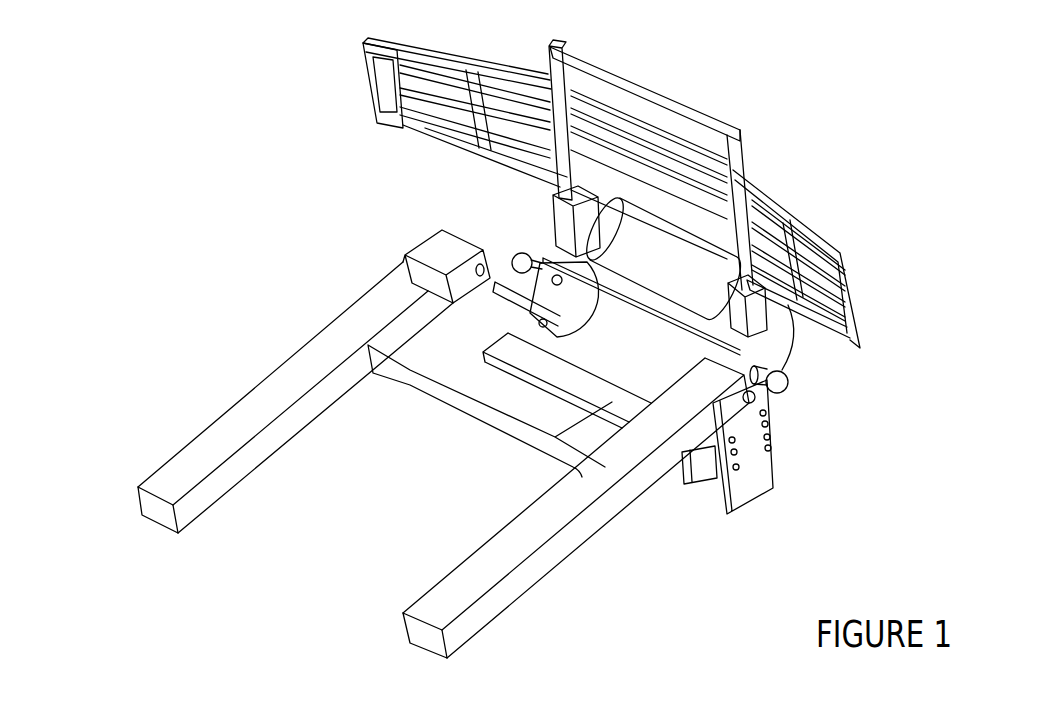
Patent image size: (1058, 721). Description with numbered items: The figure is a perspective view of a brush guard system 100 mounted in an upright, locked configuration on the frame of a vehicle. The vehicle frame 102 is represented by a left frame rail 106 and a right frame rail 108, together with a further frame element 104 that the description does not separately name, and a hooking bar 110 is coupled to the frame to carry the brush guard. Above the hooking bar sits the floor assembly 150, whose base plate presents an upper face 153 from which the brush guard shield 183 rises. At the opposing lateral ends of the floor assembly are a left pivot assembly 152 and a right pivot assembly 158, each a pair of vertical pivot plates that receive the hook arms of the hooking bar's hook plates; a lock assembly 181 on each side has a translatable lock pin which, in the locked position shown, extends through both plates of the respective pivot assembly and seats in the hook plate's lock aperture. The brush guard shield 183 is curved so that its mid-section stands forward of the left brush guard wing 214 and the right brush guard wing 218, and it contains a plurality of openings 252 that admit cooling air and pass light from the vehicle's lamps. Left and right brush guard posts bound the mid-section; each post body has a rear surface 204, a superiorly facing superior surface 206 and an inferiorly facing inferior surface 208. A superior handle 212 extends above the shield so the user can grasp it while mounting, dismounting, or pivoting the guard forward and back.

The brush guard system 100 is at (785, 55).
The vehicle frame 102 is at (397, 444).
The cross member 104 is at (528, 413).
The left frame rail 106 is at (292, 367).
The right frame rail 108 is at (525, 590).
The hooking bar 110 is at (580, 357).
The floor assembly 150 is at (821, 435).
The left pivot assembly 152 is at (573, 308).
The upper face 153 is at (737, 330).
The right pivot assembly 158 is at (788, 362).
The lock assembly 181 is at (517, 246).
The brush guard shield 183 is at (815, 212).
The rear surface 204 is at (565, 176).
The superior surface 206 is at (738, 170).
The inferior surface 208 is at (553, 213).
The superior handle 212 is at (678, 97).
The left brush guard wing 214 is at (425, 93).
The right brush guard wing 218 is at (830, 246).
The openings 252 is at (415, 90).